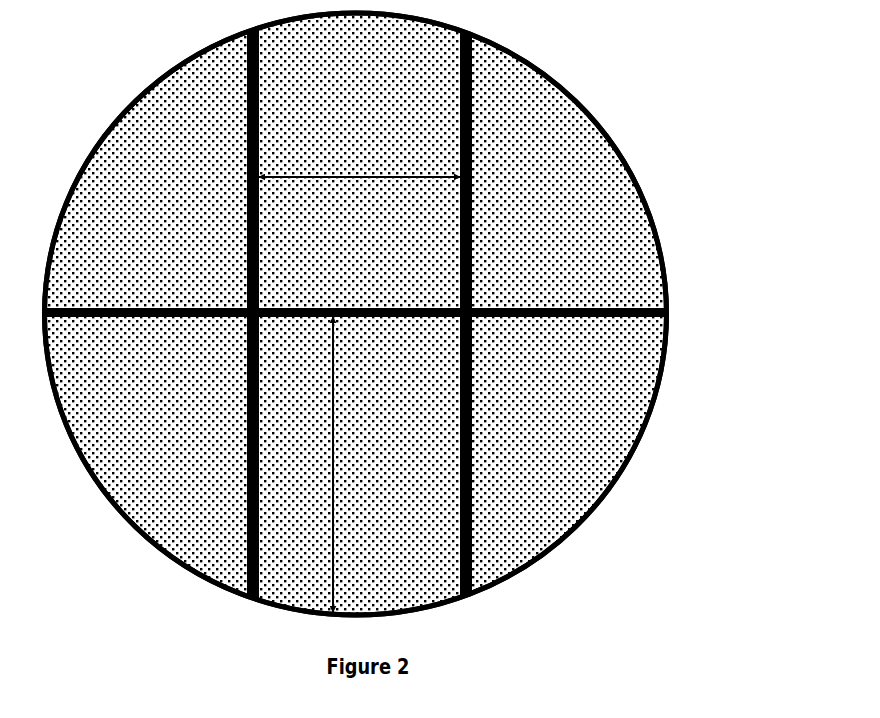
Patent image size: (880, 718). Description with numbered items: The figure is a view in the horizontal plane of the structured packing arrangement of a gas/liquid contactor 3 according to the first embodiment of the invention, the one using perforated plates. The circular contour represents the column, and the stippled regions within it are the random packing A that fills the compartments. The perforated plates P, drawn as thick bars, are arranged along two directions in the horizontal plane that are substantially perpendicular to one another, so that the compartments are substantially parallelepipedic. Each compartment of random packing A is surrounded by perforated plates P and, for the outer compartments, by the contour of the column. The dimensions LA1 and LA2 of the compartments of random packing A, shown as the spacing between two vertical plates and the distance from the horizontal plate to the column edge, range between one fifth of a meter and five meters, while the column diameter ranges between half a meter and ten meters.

The random packing A is at (599, 161).
The gas/liquid contactor 3 is at (670, 346).
The perforated plates P is at (476, 489).
The compartment dimension LA1 is at (359, 204).
The compartment dimension LA2 is at (360, 464).